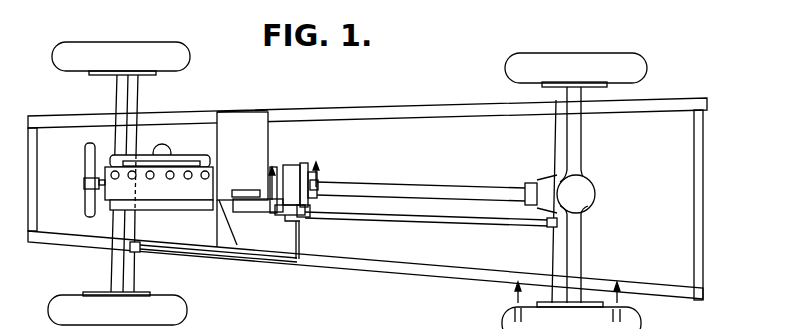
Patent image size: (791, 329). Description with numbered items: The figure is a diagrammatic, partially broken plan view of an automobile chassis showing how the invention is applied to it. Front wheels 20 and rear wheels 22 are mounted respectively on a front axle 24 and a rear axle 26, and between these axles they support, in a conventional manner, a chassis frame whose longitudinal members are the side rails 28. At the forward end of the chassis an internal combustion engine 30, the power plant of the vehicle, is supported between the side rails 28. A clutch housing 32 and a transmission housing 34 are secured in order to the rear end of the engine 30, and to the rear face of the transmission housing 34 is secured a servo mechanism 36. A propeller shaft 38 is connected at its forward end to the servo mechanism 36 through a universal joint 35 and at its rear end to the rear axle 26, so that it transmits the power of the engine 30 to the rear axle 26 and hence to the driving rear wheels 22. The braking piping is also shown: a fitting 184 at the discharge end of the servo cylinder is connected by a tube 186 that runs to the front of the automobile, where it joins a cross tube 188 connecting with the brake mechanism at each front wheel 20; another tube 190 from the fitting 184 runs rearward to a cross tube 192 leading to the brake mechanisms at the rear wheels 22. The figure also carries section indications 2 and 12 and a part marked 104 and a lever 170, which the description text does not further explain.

The section line 2- 2 is at (297, 174).
The section line 12- 12 is at (566, 289).
The front wheels 20 is at (182, 62).
The rear wheels 22 is at (638, 72).
The front axle 24 is at (118, 86).
The rear axle 26 is at (580, 136).
The side rails 28 is at (427, 105).
The internal combustion engine 30 is at (148, 180).
The clutch housing 32 is at (224, 214).
The transmission housing 34 is at (248, 230).
The universal joint 35 is at (318, 177).
The servo mechanism 36 is at (288, 166).
The propeller shaft 38 is at (397, 190).
The element 104 is at (256, 325).
The lever 170 is at (315, 203).
The fitting 184 is at (308, 218).
The tube 186 is at (300, 248).
The cross tube 188 is at (136, 256).
The tube 190 is at (371, 219).
The cross tube 192 is at (549, 229).